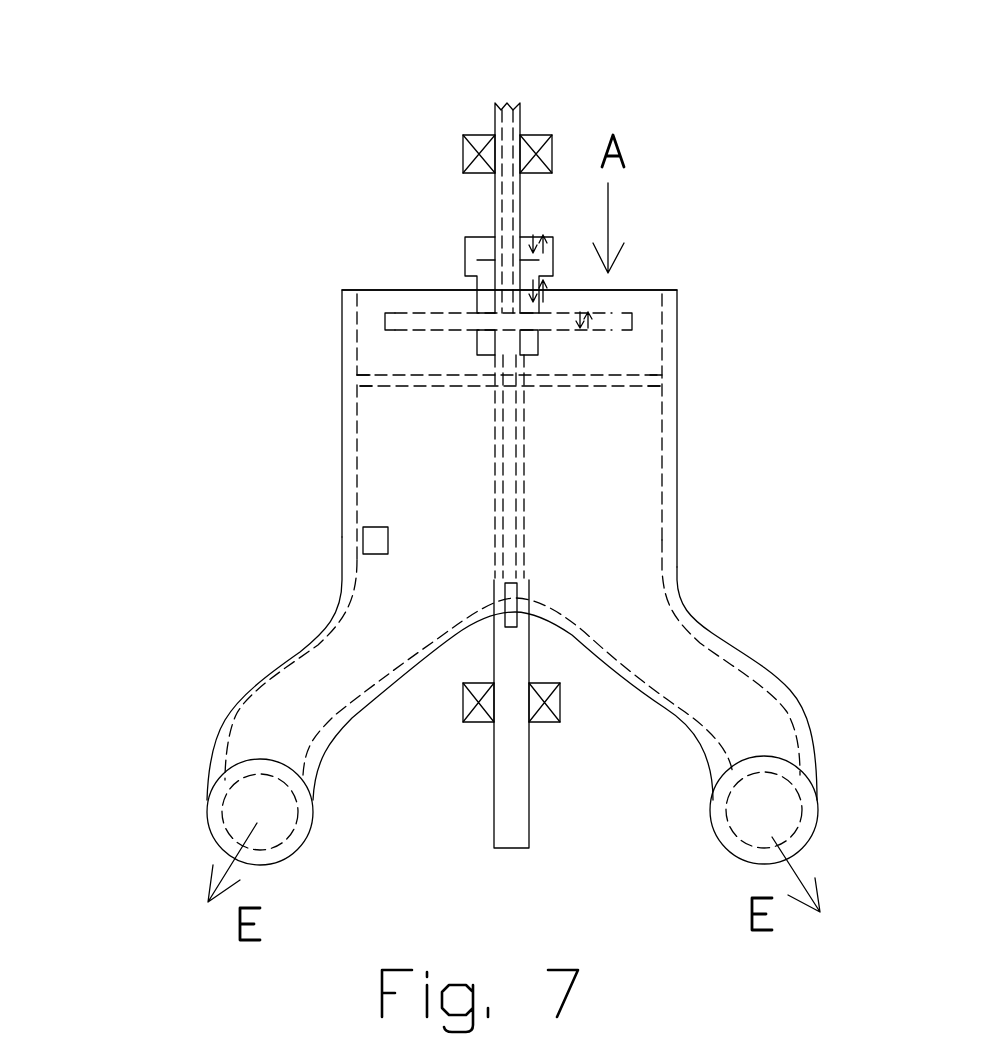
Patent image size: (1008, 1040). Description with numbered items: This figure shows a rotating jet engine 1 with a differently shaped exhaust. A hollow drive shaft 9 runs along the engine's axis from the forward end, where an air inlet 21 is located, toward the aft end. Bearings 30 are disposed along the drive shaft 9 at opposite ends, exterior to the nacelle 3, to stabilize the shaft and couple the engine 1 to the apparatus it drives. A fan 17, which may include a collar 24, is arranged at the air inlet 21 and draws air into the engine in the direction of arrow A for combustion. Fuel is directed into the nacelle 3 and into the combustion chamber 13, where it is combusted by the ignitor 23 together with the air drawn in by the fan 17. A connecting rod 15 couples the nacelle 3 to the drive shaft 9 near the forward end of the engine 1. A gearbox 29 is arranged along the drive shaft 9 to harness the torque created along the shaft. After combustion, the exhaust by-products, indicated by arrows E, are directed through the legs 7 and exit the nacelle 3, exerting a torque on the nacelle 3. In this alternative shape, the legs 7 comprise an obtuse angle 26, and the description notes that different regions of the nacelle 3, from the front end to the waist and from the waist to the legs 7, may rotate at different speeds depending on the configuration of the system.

The rotating jet engine 1 is at (217, 44).
The nacelle 3 is at (583, 439).
The legs 7 is at (453, 701).
The hollow drive shaft 9 is at (384, 475).
The combustion chamber 13 is at (509, 427).
The connecting rod 15 is at (411, 393).
The fan 17 is at (415, 324).
The air inlet 21 is at (551, 236).
The ignitor 23 is at (270, 578).
The collar 24 is at (653, 319).
The obtuse angle 26 is at (512, 689).
The gearbox 29 is at (441, 274).
The bearings 30 is at (489, 424).